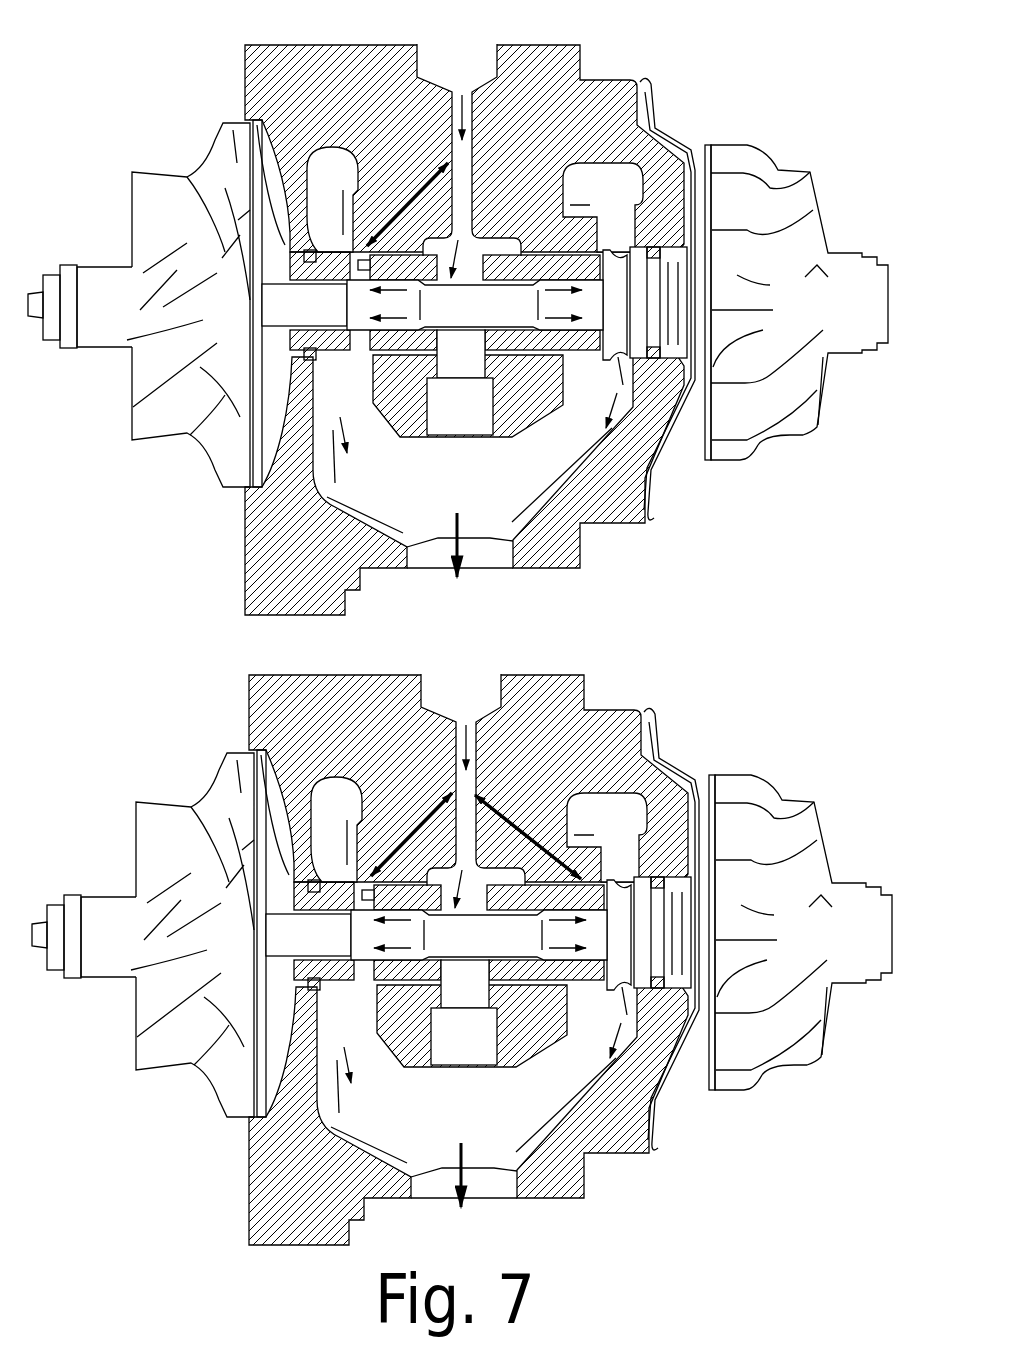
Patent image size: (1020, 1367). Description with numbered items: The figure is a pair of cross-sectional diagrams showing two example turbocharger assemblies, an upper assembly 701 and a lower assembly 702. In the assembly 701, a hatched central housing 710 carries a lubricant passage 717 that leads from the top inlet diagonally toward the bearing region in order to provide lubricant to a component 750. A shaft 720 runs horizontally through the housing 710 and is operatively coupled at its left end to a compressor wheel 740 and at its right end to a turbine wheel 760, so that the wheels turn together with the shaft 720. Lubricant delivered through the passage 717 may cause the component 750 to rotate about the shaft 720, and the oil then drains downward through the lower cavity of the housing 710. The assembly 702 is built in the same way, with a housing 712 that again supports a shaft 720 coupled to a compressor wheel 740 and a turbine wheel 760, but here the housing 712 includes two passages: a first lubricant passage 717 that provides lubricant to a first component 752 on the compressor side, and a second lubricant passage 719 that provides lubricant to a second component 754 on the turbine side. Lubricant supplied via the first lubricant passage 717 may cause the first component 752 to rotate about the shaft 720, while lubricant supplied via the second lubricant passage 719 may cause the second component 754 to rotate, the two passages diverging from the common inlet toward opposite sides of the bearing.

The assembly 701 is at (126, 106).
The assembly 702 is at (140, 736).
The housing 710 is at (302, 106).
The housing 712 is at (318, 738).
The lubricant passage 717 is at (433, 173).
The second lubricant passage 719 is at (505, 815).
The shaft 720 is at (443, 315).
The compressor wheel 740 is at (85, 321).
The component 750 is at (366, 410).
The first component 752 is at (368, 1035).
The second component 754 is at (547, 1035).
The turbine wheel 760 is at (785, 306).